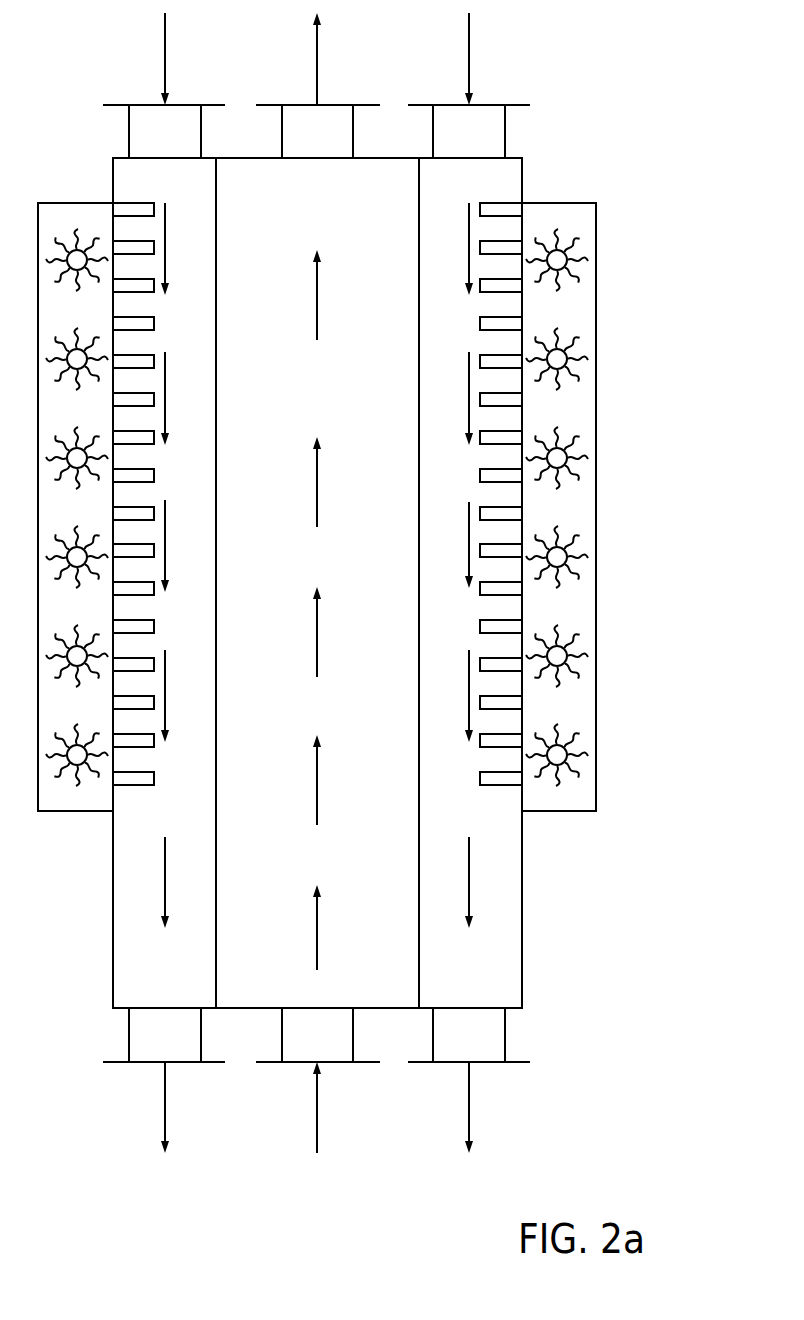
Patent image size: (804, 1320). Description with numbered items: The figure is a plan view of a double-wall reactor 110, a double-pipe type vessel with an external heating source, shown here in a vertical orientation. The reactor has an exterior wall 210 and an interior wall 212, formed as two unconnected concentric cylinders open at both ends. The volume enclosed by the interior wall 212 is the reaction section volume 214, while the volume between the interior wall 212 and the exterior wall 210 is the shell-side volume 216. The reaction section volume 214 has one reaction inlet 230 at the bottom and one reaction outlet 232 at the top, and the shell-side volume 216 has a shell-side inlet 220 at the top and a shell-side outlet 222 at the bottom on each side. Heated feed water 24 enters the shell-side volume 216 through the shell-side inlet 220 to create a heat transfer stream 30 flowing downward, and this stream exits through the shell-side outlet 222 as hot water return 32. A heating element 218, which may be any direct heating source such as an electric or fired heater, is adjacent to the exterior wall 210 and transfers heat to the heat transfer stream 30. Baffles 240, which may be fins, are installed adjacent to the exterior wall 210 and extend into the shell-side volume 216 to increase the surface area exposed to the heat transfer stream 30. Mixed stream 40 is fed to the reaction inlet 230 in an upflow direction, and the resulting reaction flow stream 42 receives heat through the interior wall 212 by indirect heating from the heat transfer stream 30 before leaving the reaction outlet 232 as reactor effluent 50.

The double-wall reactor 110 is at (600, 56).
The exterior wall 210 is at (527, 961).
The interior wall 212 is at (412, 978).
The reaction section volume 214 is at (346, 397).
The shell-side volume 216 is at (193, 973).
The heating element 218 is at (583, 517).
The shell-side inlet 220 is at (194, 144).
The shell-side outlet 222 is at (194, 1049).
The reaction inlet 230 is at (349, 1049).
The reaction outlet 232 is at (349, 144).
The baffles 240 is at (503, 196).
The heated feed water 24 is at (164, 27).
The heat transfer stream 30 is at (166, 544).
The hot water return 32 is at (164, 1110).
The mixed stream 40 is at (316, 1110).
The reaction flow stream 42 is at (318, 785).
The reactor effluent 50 is at (316, 53).